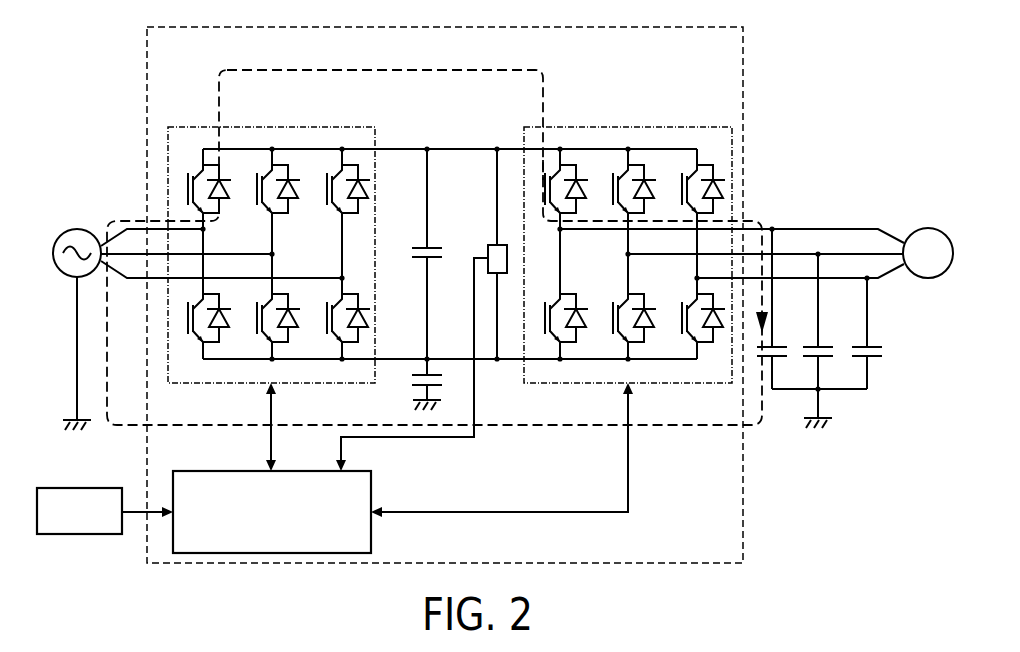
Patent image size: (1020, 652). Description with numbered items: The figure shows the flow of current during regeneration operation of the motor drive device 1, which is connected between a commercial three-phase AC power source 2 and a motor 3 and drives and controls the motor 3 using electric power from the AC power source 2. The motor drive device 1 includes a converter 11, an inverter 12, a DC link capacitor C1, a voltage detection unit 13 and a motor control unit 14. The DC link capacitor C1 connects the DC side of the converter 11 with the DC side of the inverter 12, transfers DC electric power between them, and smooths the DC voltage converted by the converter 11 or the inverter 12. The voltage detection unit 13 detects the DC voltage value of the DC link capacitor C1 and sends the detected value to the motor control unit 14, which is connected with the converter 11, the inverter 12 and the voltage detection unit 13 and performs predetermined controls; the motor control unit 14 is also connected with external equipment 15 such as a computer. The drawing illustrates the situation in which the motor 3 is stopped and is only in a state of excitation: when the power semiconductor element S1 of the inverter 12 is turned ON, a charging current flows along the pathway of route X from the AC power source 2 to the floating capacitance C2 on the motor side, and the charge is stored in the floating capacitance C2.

The motor drive device 1 is at (746, 86).
The AC power source 2 is at (77, 229).
The motor 3 is at (931, 228).
The converter 11 is at (322, 127).
The inverter 12 is at (680, 127).
The voltage detection unit 13 is at (489, 246).
The motor control unit 14 is at (196, 471).
The external equipment 15 is at (84, 488).
The route X is at (468, 70).
The power semiconductor element S1 is at (537, 168).
The DC link capacitor C1 is at (424, 246).
The floating capacitance C2 is at (773, 347).